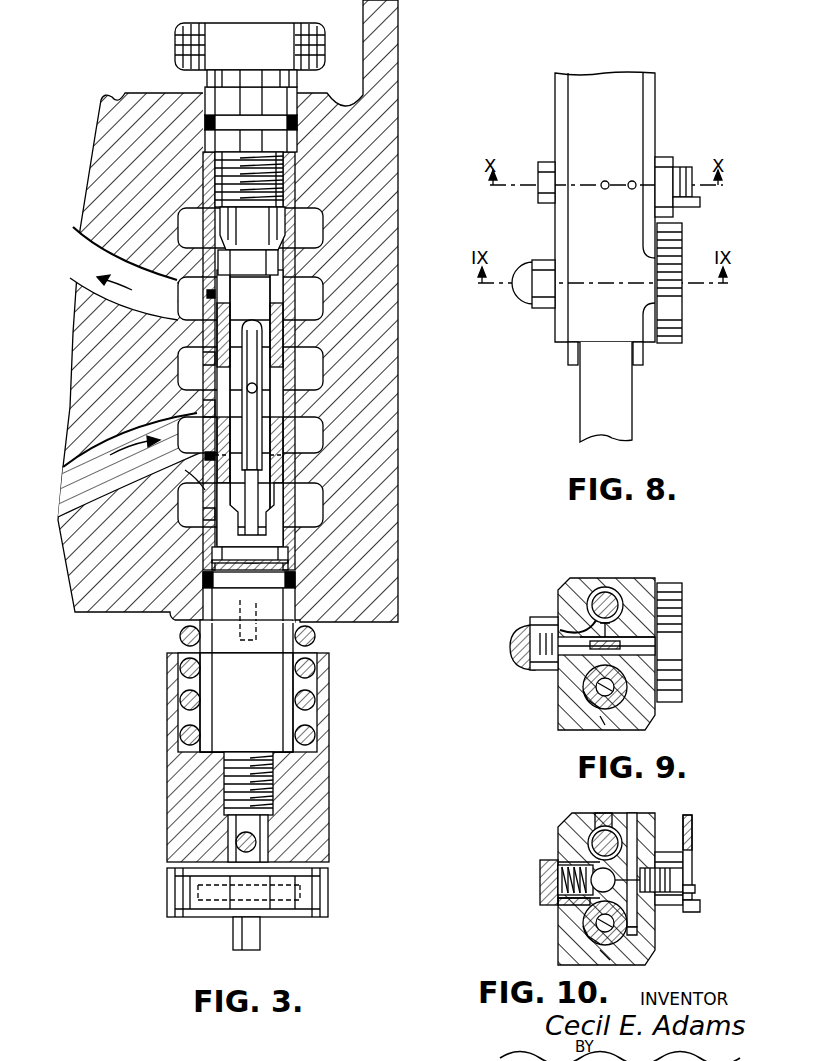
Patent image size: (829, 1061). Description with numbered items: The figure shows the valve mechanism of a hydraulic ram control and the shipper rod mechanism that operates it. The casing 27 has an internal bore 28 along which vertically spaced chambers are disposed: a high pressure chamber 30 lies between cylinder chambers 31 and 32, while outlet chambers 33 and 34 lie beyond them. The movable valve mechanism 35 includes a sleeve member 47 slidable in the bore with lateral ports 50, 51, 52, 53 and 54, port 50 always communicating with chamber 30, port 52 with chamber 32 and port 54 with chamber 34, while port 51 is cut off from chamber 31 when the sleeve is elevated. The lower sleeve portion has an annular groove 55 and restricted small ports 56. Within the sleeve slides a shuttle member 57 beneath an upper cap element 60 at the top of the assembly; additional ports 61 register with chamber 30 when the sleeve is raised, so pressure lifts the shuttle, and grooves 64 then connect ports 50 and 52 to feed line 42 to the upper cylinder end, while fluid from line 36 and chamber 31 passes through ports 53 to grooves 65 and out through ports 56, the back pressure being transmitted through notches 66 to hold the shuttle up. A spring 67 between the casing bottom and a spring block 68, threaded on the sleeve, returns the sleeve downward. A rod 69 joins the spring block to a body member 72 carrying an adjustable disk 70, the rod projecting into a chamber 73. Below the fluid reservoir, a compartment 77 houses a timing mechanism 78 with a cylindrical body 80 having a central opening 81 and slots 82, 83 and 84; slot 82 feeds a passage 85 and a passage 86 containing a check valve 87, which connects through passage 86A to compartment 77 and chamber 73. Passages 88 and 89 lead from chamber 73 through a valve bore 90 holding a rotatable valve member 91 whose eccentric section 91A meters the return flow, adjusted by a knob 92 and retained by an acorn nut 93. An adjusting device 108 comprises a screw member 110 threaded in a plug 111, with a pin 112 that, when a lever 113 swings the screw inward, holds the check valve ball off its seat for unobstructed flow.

In FIG. 3, the casing 27 is at (390, 178).
In FIG. 3, the internal bore 28 is at (297, 180).
In FIG. 3, the chamber 30 is at (298, 355).
In FIG. 3, the cylinder chamber 31 is at (310, 443).
In FIG. 3, the cylinder chamber 32 is at (312, 305).
In FIG. 3, the outlet chamber 33 is at (313, 505).
In FIG. 3, the outlet chamber 34 is at (312, 232).
In FIG. 3, the valve mechanism 35 is at (303, 290).
In FIG. 3, the line 36 is at (75, 483).
In FIG. 3, the line 42 is at (105, 290).
In FIG. 3, the sleeve member 47 is at (293, 538).
In FIG. 3, the port 50 is at (203, 358).
In FIG. 3, the port 51 is at (205, 408).
In FIG. 3, the port 52 is at (207, 293).
In FIG. 3, the port 53 is at (205, 455).
In FIG. 3, the port 54 is at (205, 217).
In FIG. 3, the annular groove 55 is at (207, 513).
In FIG. 3, the small ports 56 is at (205, 482).
In FIG. 3, the shuttle member 57 is at (230, 262).
In FIG. 3, the knob 60 is at (176, 42).
In FIG. 3, the additional ports 61 is at (298, 383).
In FIG. 3, the grooves 64 is at (283, 325).
In FIG. 3, the grooves 65 is at (277, 435).
In FIG. 3, the notches 66 is at (297, 467).
In FIG. 3, the spring 67 is at (318, 636).
In FIG. 3, the spring block 68 is at (317, 782).
In FIG. 3, the rod 69 is at (258, 945).
In FIG. 9, the rod 69 is at (607, 592).
In FIG. 10, the rod 69 is at (600, 840).
In FIG. 3, the disk 70 is at (328, 900).
In FIG. 8, the body member 72 is at (623, 115).
In FIG. 10, the chamber 73 is at (608, 822).
In FIG. 9, the compartment 77 is at (585, 695).
In FIG. 10, the compartment 77 is at (598, 930).
In FIG. 10, the timing mechanism 78 is at (640, 945).
In FIG. 9, the cylindrical body 80 is at (593, 700).
In FIG. 10, the cylindrical body 80 is at (590, 935).
In FIG. 9, the central opening 81 is at (596, 688).
In FIG. 10, the central opening 81 is at (590, 950).
In FIG. 10, the slot 82 is at (650, 925).
In FIG. 10, the slot 83 is at (593, 900).
In FIG. 9, the slot 84 is at (600, 718).
In FIG. 10, the slot 84 is at (610, 957).
In FIG. 10, the passage 85 is at (635, 842).
In FIG. 10, the passage 86 is at (670, 860).
In FIG. 10, the passage 86A is at (578, 858).
In FIG. 10, the check valve 87 is at (560, 870).
In FIG. 9, the passage 88 is at (570, 590).
In FIG. 9, the passage 89 is at (655, 652).
In FIG. 9, the valve bore 90 is at (560, 620).
In FIG. 9, the rotatable valve member 91 is at (650, 640).
In FIG. 9, the eccentric section 91A is at (618, 637).
In FIG. 8, the knob 92 is at (672, 328).
In FIG. 9, the knob 92 is at (672, 680).
In FIG. 8, the acorn nut 93 is at (528, 300).
In FIG. 9, the acorn nut 93 is at (522, 662).
In FIG. 8, the adjusting device 108 is at (686, 163).
In FIG. 10, the adjusting device 108 is at (698, 890).
In FIG. 10, the screw member 110 is at (675, 880).
In FIG. 8, the plug 111 is at (667, 207).
In FIG. 10, the plug 111 is at (688, 912).
In FIG. 10, the pin 112 is at (565, 895).
In FIG. 8, the lever 113 is at (677, 192).
In FIG. 10, the lever 113 is at (692, 825).